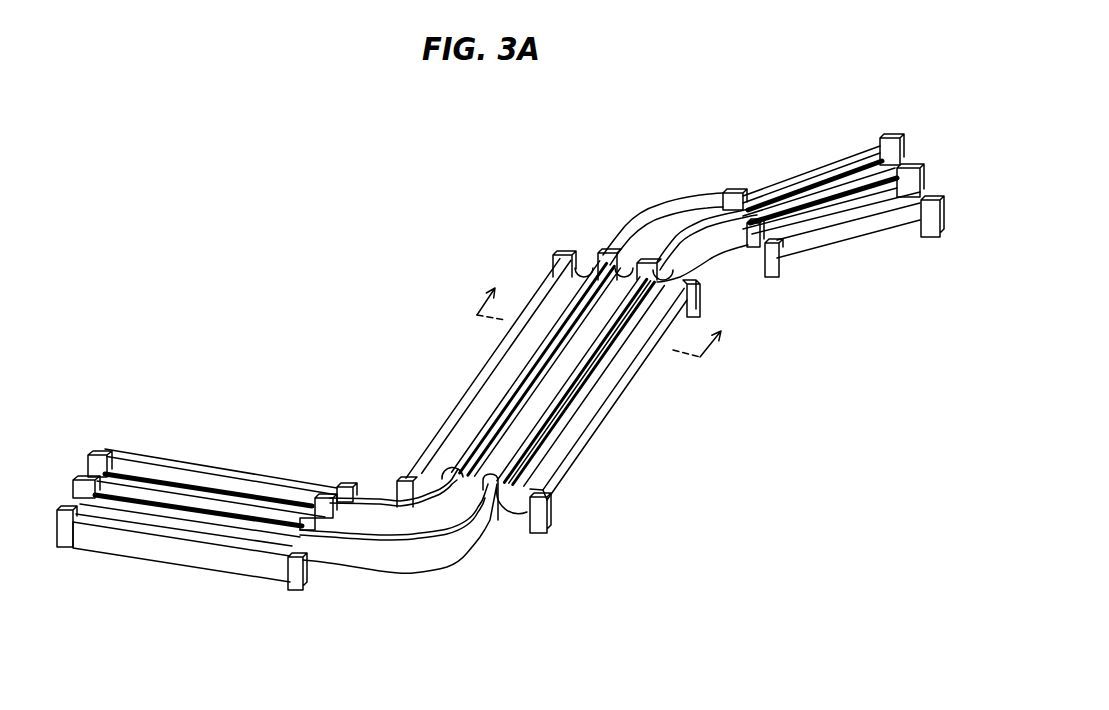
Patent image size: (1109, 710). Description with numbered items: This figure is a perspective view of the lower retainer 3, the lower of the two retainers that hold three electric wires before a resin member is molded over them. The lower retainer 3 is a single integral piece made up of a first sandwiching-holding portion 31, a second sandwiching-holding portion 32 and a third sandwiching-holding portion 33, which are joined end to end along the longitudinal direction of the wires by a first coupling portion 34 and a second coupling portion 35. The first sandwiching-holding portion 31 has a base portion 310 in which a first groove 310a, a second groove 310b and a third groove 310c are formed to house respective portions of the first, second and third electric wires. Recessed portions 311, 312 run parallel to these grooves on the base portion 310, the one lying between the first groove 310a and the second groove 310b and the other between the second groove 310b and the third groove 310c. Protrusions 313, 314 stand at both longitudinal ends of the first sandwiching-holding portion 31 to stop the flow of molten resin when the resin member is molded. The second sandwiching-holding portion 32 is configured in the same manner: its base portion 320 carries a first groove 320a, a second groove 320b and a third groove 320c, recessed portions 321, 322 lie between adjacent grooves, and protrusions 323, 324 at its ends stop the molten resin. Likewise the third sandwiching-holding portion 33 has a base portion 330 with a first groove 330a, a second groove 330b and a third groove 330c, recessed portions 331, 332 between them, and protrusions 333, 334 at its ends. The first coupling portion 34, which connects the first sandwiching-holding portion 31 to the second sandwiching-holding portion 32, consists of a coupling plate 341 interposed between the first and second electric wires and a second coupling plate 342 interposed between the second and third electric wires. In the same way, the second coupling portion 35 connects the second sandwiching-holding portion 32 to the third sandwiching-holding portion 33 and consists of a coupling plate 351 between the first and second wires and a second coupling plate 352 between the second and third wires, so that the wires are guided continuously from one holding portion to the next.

The lower retainer 3 is at (911, 129).
The first sandwiching-holding portion 31 is at (134, 561).
The base portion 310 is at (209, 556).
The first groove 310a is at (175, 518).
The second groove 310b is at (141, 490).
The third groove 310c is at (124, 462).
The recessed portion 311 is at (282, 522).
The recessed portion 312 is at (248, 497).
The protrusion 313 is at (66, 549).
The protrusion 314 is at (291, 578).
The second sandwiching-holding portion 32 is at (654, 384).
The base portion 320 is at (611, 406).
The first groove 320a is at (492, 447).
The second groove 320b is at (520, 414).
The third groove 320c is at (508, 377).
The recessed portion 321 is at (597, 332).
The recessed portion 322 is at (557, 350).
The protrusion 323 is at (549, 521).
The protrusion 324 is at (701, 303).
The third sandwiching-holding portion 33 is at (843, 268).
The base portion 330 is at (846, 241).
The first groove 330a is at (752, 191).
The second groove 330b is at (790, 197).
The third groove 330c is at (800, 172).
The recessed portion 331 is at (850, 193).
The recessed portion 332 is at (871, 165).
The protrusion 333 is at (773, 262).
The protrusion 334 is at (931, 231).
The first coupling portion 34 is at (492, 577).
The coupling plate 341 is at (421, 556).
The second coupling plate 342 is at (391, 521).
The second coupling portion 35 is at (581, 186).
The coupling plate 351 is at (655, 252).
The second coupling plate 352 is at (637, 212).